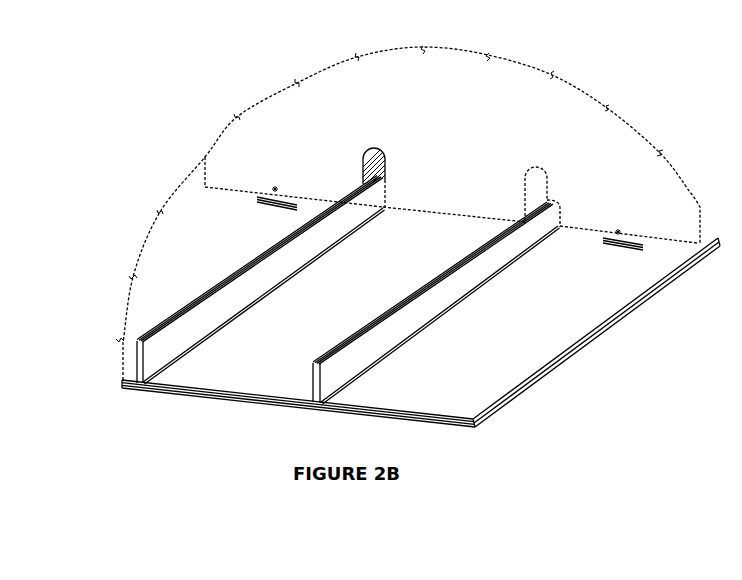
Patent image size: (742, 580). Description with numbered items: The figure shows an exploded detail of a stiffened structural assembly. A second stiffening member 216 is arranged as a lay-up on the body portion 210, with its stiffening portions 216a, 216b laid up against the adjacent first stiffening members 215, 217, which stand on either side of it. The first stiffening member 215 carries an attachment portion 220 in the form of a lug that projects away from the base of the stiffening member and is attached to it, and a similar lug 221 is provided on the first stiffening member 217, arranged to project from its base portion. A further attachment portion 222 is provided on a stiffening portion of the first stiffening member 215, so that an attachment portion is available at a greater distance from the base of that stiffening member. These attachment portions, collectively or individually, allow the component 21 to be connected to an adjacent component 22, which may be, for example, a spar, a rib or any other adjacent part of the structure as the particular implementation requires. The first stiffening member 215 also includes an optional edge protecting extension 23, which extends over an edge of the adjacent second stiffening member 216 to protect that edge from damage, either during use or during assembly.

The component 21 is at (565, 353).
The adjacent component 22 is at (555, 117).
The edge protecting extension 23 is at (257, 238).
The body portion 210 is at (425, 390).
The first stiffening member 215 is at (193, 287).
The second stiffening member 216 is at (341, 313).
The stiffening portion 216a is at (325, 233).
The stiffening portion 216b is at (318, 370).
The first stiffening member 217 is at (478, 365).
The attachment portion 220 is at (277, 199).
The lug 221 is at (613, 240).
The further attachment portion 222 is at (383, 150).